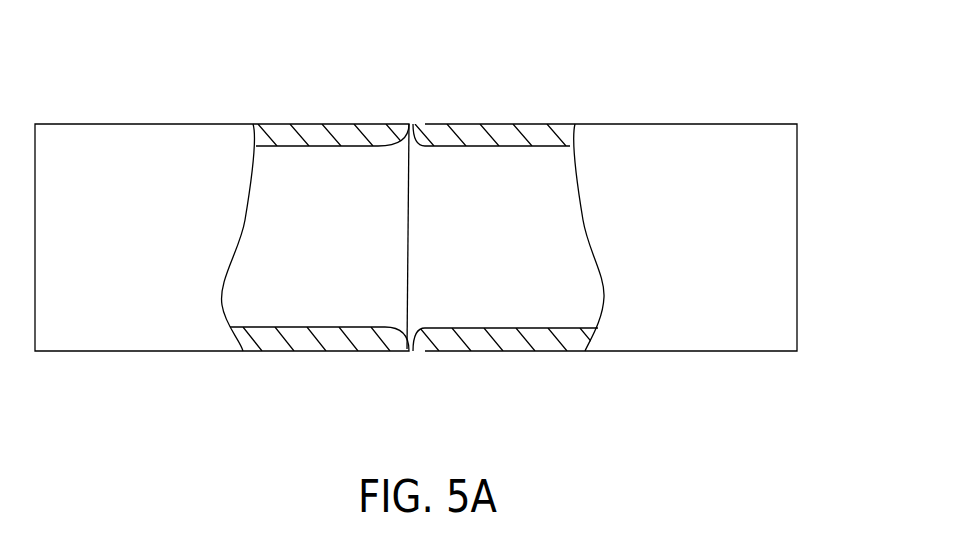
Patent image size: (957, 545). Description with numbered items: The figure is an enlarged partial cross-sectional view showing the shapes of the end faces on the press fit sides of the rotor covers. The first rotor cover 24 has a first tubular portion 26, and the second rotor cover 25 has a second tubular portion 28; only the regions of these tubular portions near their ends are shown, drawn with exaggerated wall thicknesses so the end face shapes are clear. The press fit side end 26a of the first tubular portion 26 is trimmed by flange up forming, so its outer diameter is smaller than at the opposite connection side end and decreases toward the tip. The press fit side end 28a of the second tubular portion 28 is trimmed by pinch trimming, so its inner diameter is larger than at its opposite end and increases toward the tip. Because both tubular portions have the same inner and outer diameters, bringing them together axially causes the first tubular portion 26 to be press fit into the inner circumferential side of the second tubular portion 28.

The second rotor cover 25 is at (187, 101).
The first rotor cover 24 is at (673, 101).
The second tubular portion 28 is at (292, 124).
The press fit side end 28a is at (386, 124).
The first tubular portion 26 is at (494, 124).
The press fit side end 26a is at (413, 124).